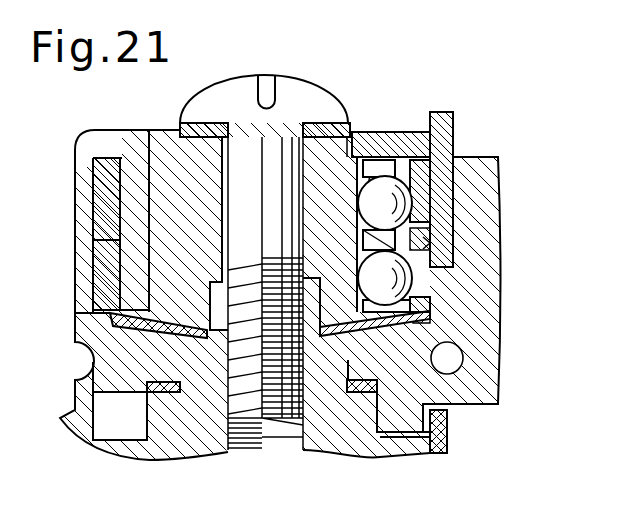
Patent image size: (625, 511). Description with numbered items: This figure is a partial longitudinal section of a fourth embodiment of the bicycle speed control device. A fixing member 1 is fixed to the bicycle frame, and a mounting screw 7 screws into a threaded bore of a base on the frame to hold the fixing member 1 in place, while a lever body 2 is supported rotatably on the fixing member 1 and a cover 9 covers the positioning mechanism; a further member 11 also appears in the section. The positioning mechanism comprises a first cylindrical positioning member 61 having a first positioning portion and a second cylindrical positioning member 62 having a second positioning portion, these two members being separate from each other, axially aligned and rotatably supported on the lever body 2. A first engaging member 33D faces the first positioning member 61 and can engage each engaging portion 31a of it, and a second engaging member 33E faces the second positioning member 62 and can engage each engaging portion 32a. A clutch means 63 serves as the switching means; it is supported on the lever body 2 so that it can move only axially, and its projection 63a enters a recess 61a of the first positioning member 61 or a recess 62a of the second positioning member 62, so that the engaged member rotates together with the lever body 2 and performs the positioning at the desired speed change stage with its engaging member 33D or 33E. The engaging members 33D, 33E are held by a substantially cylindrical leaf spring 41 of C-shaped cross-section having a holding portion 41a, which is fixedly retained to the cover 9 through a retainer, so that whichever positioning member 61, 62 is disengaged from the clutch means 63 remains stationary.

The fixing member 1 is at (342, 440).
The lever body 2 is at (487, 371).
The mounting screw 7 is at (293, 112).
The cover 9 is at (340, 140).
The lower member 11 is at (447, 452).
The engaging portion 31a is at (430, 290).
The engaging portion 32a is at (420, 195).
The first engaging member 33D is at (430, 325).
The second engaging member 33E is at (435, 160).
The leaf spring 41 is at (403, 165).
The holding portion 41a is at (372, 178).
The first cylindrical positioning member 61 is at (410, 318).
The recess 61a is at (413, 283).
The second cylindrical positioning member 62 is at (415, 175).
The recess 62a is at (422, 232).
The clutch means 63 is at (453, 125).
The projection 63a is at (427, 241).